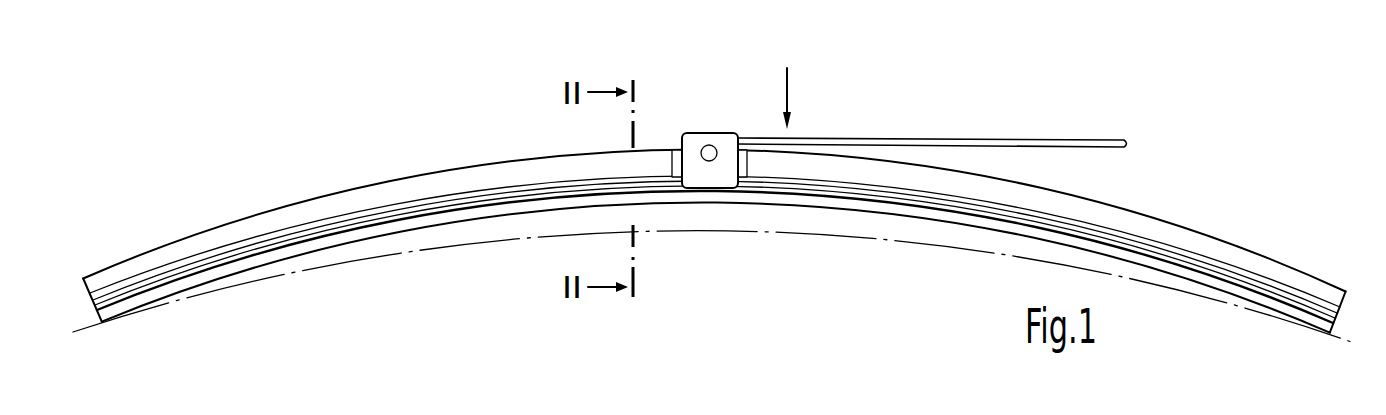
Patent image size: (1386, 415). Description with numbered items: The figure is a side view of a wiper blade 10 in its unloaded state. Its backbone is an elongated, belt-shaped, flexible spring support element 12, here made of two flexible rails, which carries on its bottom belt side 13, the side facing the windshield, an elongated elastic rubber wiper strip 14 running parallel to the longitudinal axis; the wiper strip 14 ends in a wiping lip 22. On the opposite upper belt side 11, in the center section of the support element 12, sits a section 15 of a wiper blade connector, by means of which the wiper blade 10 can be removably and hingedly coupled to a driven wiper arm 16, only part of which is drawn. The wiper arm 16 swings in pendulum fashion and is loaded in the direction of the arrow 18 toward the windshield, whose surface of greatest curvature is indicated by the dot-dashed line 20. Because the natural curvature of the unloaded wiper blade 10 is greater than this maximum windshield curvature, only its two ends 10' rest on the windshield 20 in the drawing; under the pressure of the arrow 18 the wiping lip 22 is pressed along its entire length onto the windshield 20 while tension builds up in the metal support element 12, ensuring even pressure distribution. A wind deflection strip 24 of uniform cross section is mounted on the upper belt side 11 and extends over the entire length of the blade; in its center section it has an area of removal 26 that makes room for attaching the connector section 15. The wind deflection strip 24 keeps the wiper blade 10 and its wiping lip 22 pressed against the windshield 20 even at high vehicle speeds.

The wiper blade 10 is at (714, 237).
The ends of the wiper blade 10' is at (710, 362).
The upper belt side 11 is at (440, 224).
The flexible spring support element 12 is at (400, 204).
The bottom belt side 13 is at (441, 228).
The wiper strip 14 is at (497, 217).
The section of a wiper blade connector 15 is at (728, 142).
The wiper arm 16 is at (870, 137).
The arrow 18 is at (787, 90).
The dot-dashed line 20 is at (768, 233).
The wiping lip 22 is at (375, 239).
The wind deflection strip 24 is at (305, 202).
The area of removal 26 is at (675, 145).